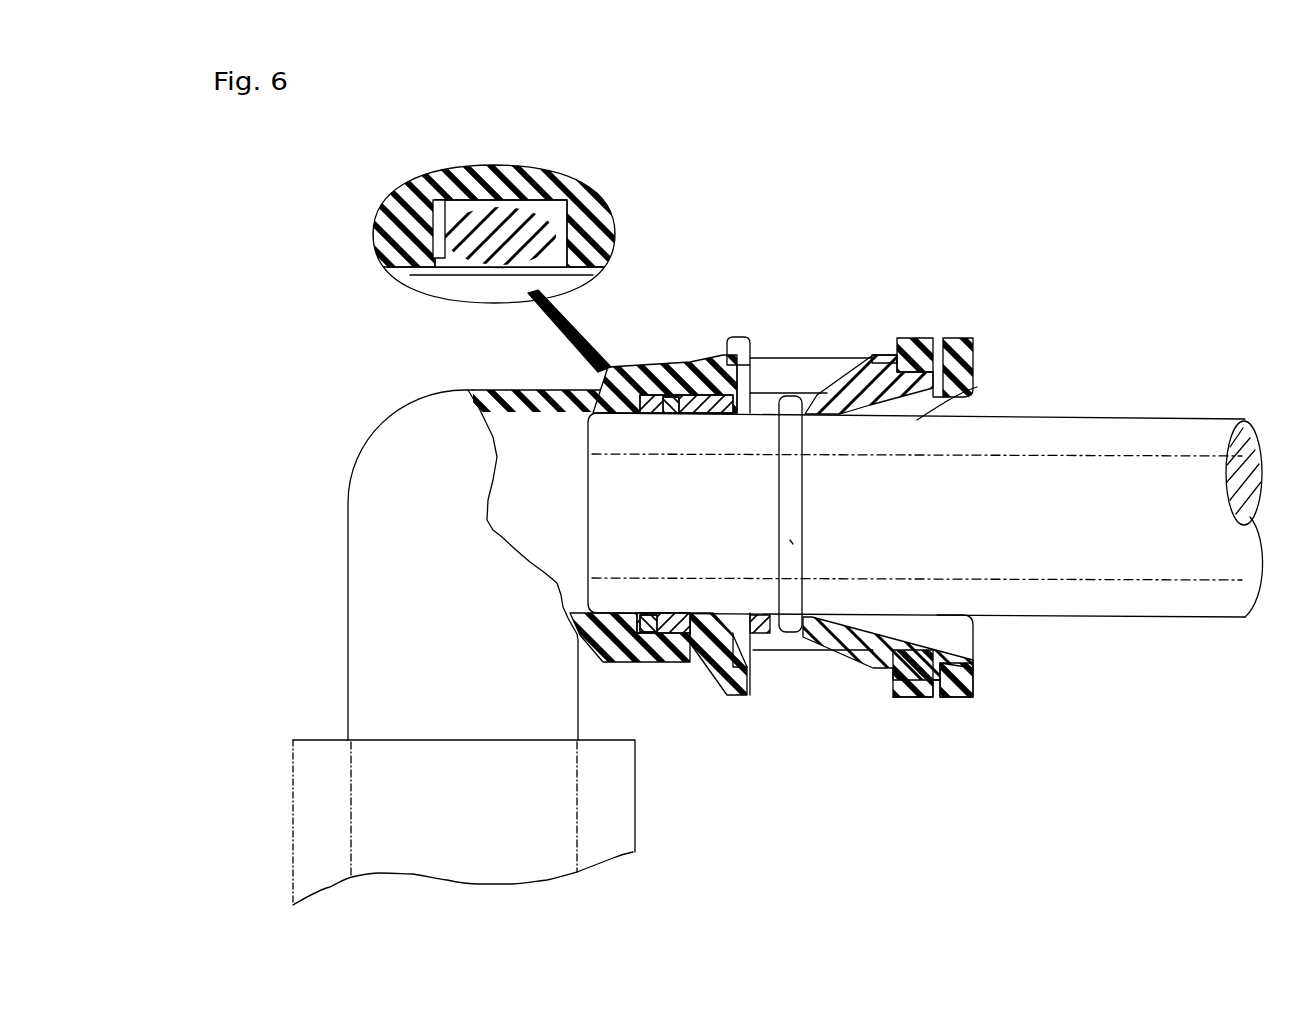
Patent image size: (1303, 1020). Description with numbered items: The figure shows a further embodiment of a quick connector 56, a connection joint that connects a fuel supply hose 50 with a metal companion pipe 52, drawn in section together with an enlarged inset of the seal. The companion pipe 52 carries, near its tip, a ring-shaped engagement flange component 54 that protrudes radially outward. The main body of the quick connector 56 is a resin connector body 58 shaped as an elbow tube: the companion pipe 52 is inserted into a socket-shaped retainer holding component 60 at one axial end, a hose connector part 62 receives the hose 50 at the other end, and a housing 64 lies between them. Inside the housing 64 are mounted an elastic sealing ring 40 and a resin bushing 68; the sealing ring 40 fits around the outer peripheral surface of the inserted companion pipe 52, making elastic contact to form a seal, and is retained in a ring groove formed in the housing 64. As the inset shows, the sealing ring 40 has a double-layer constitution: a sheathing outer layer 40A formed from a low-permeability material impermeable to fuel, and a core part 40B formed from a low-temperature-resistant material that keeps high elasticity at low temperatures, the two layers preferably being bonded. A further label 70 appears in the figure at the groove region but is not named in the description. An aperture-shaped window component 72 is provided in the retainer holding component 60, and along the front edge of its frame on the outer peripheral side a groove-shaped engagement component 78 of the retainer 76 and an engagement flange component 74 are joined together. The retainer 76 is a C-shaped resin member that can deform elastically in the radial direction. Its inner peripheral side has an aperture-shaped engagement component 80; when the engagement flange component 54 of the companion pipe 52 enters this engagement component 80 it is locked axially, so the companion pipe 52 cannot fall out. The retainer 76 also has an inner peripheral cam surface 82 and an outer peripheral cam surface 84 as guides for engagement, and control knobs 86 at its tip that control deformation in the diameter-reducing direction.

The elastic sealing ring 40 is at (522, 215).
The outer layer 40A is at (433, 200).
The core part 40B is at (500, 236).
The fuel supply hose 50 is at (291, 838).
The companion pipe 52 is at (575, 262).
The engagement flange component 54 is at (793, 543).
The quick connector 56 is at (700, 276).
The connector body 58 is at (665, 348).
The retainer holding component 60 is at (740, 333).
The hose connector part 62 is at (349, 790).
The housing 64 is at (506, 388).
The resin bushing 68 is at (700, 428).
The groove wall 70 is at (432, 212).
The window component 72 is at (752, 345).
The engagement flange component 74 is at (912, 337).
The retainer 76 is at (980, 680).
The groove-shaped engagement component 78 is at (916, 628).
The engagement component 80 is at (798, 393).
The inner peripheral cam surface 82 is at (977, 387).
The outer peripheral cam surface 84 is at (850, 420).
The control knobs 86 is at (958, 337).